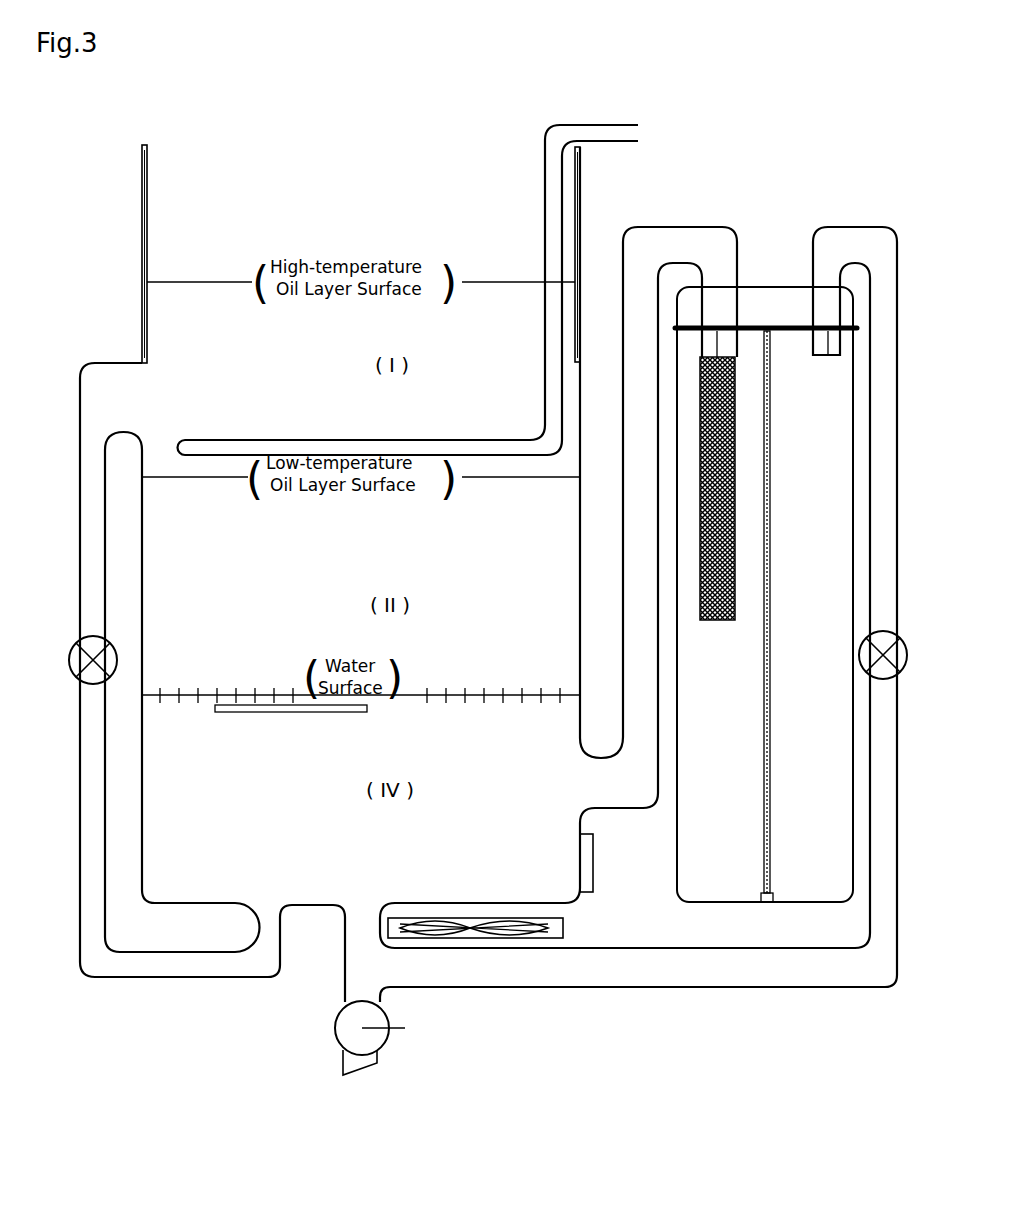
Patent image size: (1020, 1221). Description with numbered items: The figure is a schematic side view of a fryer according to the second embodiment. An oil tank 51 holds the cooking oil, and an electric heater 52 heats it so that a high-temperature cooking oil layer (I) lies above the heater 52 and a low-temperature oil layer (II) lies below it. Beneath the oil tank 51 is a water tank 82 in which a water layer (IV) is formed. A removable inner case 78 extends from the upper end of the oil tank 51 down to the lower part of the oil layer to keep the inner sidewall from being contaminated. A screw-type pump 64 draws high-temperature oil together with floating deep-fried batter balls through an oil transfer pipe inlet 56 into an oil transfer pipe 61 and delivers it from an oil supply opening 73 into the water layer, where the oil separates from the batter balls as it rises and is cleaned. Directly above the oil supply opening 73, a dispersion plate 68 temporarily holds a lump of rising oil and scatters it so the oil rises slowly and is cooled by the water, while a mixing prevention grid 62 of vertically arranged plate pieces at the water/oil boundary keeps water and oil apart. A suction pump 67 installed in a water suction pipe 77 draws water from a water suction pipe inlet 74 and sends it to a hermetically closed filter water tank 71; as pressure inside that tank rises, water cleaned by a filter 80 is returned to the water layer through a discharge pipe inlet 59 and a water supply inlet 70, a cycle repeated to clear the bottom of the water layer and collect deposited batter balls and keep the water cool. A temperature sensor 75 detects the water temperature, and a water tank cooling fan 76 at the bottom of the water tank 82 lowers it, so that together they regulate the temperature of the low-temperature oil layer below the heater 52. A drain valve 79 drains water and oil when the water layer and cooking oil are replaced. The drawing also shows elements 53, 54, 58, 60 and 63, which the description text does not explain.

The oil tank 51 is at (143, 160).
The electric heater 52 is at (318, 440).
The second partition wall 53 is at (713, 227).
The heat exchange container 54 is at (778, 310).
The oil transfer pipe inlet 56 is at (133, 407).
The passage 58 is at (640, 378).
The discharge pipe inlet 59 is at (736, 421).
The temperature sensor 60 is at (828, 340).
The oil transfer pipe 61 is at (95, 587).
The mixing prevention grid 62 is at (502, 695).
The heater 63 is at (736, 515).
The screw-type pump 64 is at (93, 645).
The suction pump 67 is at (868, 651).
The dispersion plate 68 is at (243, 712).
The water supply inlet 70 is at (583, 790).
The filter water tank 71 is at (678, 762).
The oil supply opening 73 is at (275, 903).
The water suction pipe inlet 74 is at (367, 890).
The temperature sensor 75 is at (594, 844).
The water tank cooling fan 76 is at (505, 930).
The water suction pipe 77 is at (690, 975).
The inner case 78 is at (148, 232).
The drain valve 79 is at (362, 1040).
The filter 80 is at (770, 860).
The water tank 82 is at (143, 750).